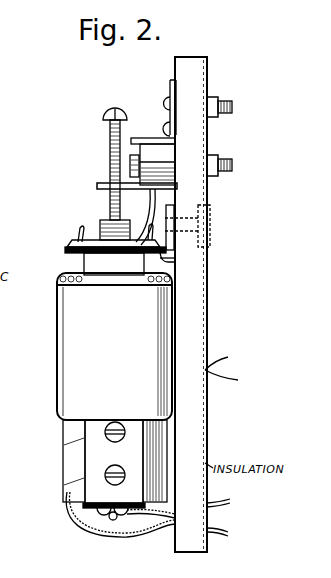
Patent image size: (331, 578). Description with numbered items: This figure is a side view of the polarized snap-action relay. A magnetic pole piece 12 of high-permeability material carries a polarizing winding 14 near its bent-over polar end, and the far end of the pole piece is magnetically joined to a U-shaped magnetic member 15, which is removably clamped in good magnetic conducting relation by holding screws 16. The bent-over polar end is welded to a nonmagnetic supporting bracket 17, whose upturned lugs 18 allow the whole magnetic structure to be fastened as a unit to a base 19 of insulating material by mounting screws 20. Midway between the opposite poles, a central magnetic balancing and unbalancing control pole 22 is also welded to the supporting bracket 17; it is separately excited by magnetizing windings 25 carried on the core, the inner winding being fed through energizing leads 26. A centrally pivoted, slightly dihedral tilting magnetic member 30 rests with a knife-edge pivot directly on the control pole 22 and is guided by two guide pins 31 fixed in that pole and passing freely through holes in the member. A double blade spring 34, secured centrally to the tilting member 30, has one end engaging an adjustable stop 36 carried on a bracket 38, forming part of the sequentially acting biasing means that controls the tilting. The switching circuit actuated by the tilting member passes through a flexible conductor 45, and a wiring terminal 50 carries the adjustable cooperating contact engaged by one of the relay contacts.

The magnetic pole piece 12 is at (83, 266).
The polarizing winding 14 is at (59, 358).
The U-shaped magnetic member 15 is at (86, 514).
The holding screws 16 is at (121, 440).
The nonmagnetic supporting bracket 17 is at (170, 258).
The upturned lugs 18 is at (170, 207).
The base 19 is at (205, 300).
The mounting screws 20 is at (211, 212).
The central magnetic balancing and unbalancing control pole 22 is at (66, 251).
The magnetizing windings 25 is at (63, 453).
The energizing leads 26 is at (155, 522).
The tilting magnetic flux conducting member 30 is at (69, 244).
The guide pins 31 is at (78, 231).
The double blade spring 34 is at (105, 222).
The adjustable stop 36 is at (109, 202).
The bracket 38 is at (171, 90).
The flexible conductor 45 is at (144, 214).
The wiring terminal 50 is at (147, 150).